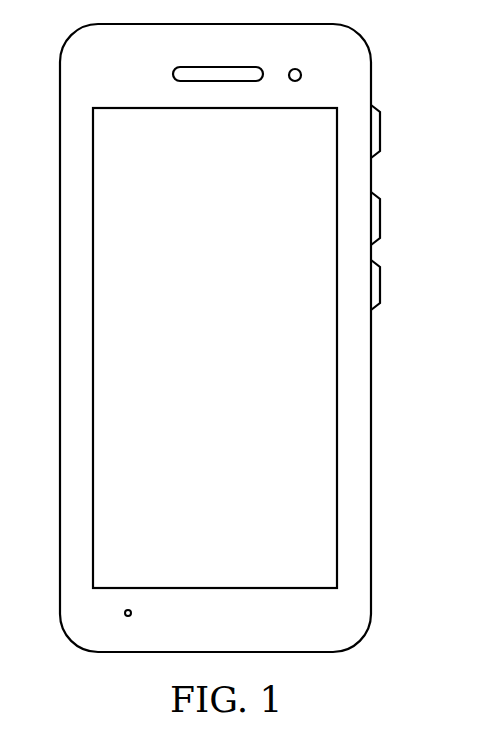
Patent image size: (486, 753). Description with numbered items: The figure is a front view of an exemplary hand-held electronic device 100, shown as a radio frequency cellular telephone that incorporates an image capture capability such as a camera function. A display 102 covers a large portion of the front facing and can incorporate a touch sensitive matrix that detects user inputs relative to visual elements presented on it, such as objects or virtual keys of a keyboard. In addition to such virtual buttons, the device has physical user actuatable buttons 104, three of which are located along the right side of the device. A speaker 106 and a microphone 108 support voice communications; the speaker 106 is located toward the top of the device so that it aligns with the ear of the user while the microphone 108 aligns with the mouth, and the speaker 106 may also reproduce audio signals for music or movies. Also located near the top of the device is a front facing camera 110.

The hand-held electronic device 100 is at (352, 609).
The display 102 is at (313, 391).
The physical user actuatable buttons 104 is at (381, 130).
The speaker 106 is at (172, 75).
The microphone 108 is at (125, 613).
The front facing camera 110 is at (302, 77).